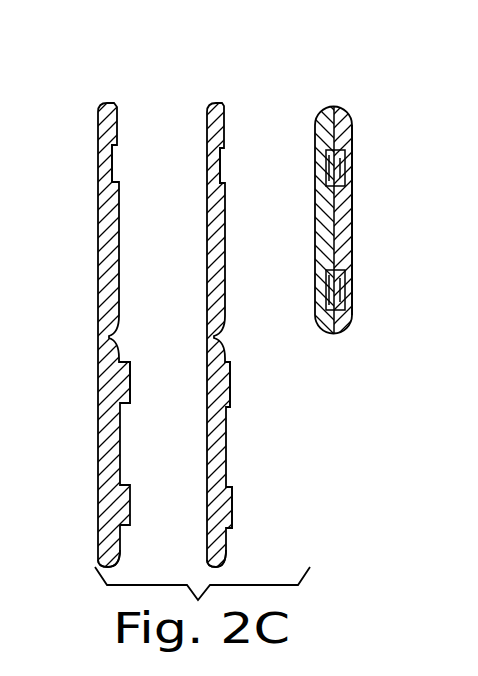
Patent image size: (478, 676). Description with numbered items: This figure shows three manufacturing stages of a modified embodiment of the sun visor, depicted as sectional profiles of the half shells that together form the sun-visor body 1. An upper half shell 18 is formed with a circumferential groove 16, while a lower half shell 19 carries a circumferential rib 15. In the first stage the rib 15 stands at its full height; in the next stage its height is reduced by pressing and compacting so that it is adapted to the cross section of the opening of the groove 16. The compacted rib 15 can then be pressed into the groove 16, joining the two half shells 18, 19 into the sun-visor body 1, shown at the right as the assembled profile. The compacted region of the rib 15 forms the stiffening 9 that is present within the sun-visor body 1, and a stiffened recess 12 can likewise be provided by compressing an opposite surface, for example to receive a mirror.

The sun-visor body 1 is at (352, 122).
The stiffening 9 is at (352, 155).
The stiffened recess 12 is at (353, 245).
The circumferential rib 15 is at (133, 382).
The circumferential groove 16 is at (113, 160).
The upper half shell 18 is at (103, 112).
The lower half shell 19 is at (207, 548).